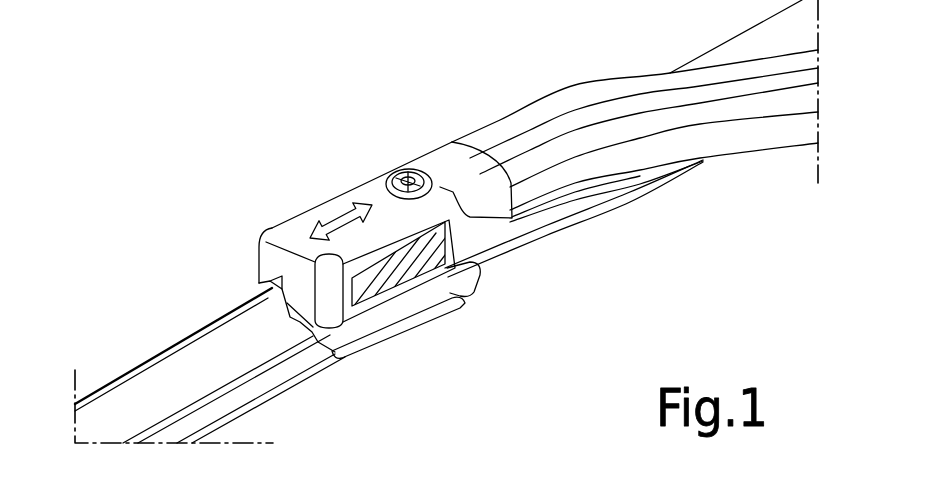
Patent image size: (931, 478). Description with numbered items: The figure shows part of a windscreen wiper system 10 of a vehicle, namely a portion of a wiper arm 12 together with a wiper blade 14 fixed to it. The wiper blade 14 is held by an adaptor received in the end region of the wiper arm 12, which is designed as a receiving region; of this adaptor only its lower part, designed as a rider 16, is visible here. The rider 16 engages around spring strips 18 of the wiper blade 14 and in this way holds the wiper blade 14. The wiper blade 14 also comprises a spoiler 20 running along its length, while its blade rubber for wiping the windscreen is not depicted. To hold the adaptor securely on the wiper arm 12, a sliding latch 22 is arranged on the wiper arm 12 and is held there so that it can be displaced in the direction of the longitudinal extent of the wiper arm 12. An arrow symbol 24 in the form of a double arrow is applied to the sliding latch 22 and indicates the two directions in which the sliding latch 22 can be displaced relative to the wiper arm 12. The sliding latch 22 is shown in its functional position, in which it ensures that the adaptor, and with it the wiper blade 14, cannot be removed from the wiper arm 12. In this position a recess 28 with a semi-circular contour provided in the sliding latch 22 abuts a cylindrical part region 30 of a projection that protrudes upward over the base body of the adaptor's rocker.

The windscreen wiper system 10 is at (163, 105).
The wiper arm 12 is at (584, 74).
The wiper blade 14 is at (143, 334).
The rider 16 is at (397, 318).
The spring strips 18 is at (543, 225).
The spoiler 20 is at (227, 367).
The sliding latch 22 is at (378, 202).
The arrow symbol 24 is at (333, 220).
The recess 28 is at (387, 168).
The cylindrical part region 30 is at (413, 163).